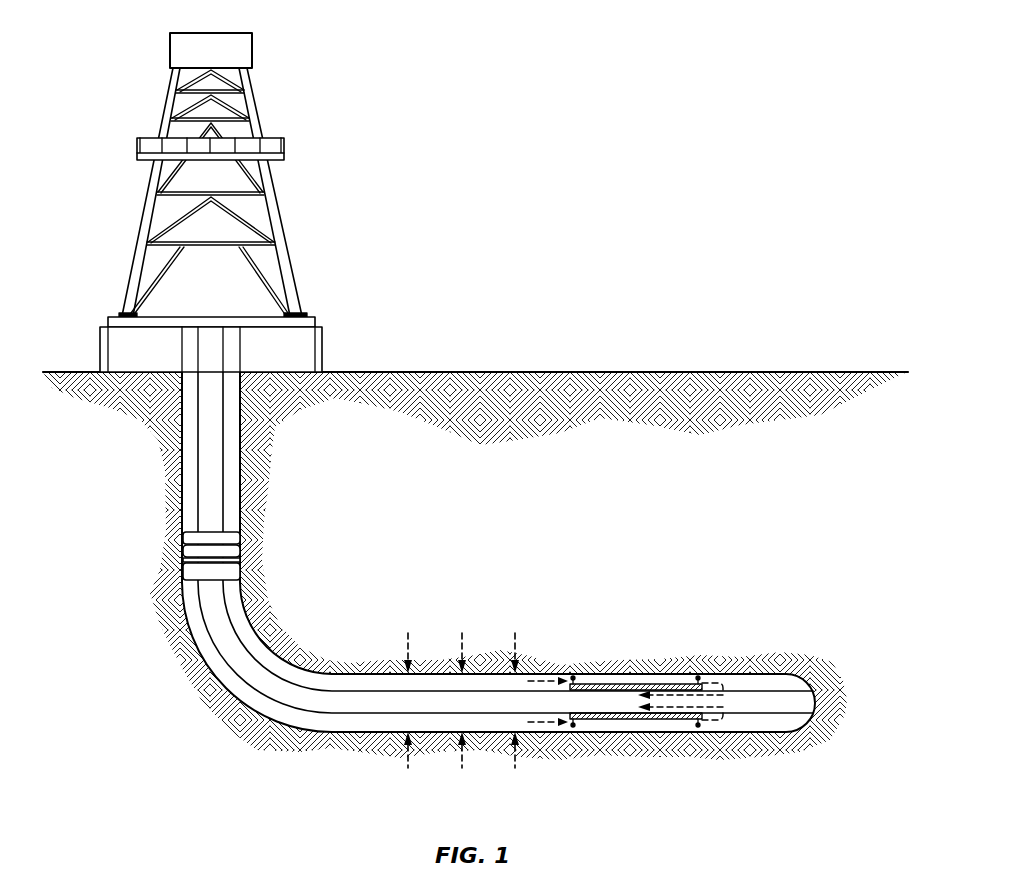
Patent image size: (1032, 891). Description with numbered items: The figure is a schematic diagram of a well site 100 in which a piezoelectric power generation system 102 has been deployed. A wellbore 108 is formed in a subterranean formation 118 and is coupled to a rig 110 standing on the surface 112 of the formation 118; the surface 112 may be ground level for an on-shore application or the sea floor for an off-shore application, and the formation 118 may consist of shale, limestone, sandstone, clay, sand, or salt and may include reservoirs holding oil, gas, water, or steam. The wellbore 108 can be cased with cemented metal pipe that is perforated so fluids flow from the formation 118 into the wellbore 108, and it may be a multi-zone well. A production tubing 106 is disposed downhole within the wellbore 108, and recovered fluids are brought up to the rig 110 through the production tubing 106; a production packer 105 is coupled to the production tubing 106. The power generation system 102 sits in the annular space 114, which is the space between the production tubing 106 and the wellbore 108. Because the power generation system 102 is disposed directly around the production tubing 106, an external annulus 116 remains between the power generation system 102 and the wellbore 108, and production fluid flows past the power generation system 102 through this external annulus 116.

The well site 100 is at (655, 133).
The piezoelectric power generation system 102 is at (625, 674).
The production packer 105 is at (240, 538).
The production tubing 106 is at (198, 457).
The wellbore 108 is at (182, 505).
The rig 110 is at (294, 280).
The surface 112 is at (617, 372).
The annular space 114 is at (360, 682).
The external annulus 116 is at (660, 684).
The subterranean formation 118 is at (620, 541).